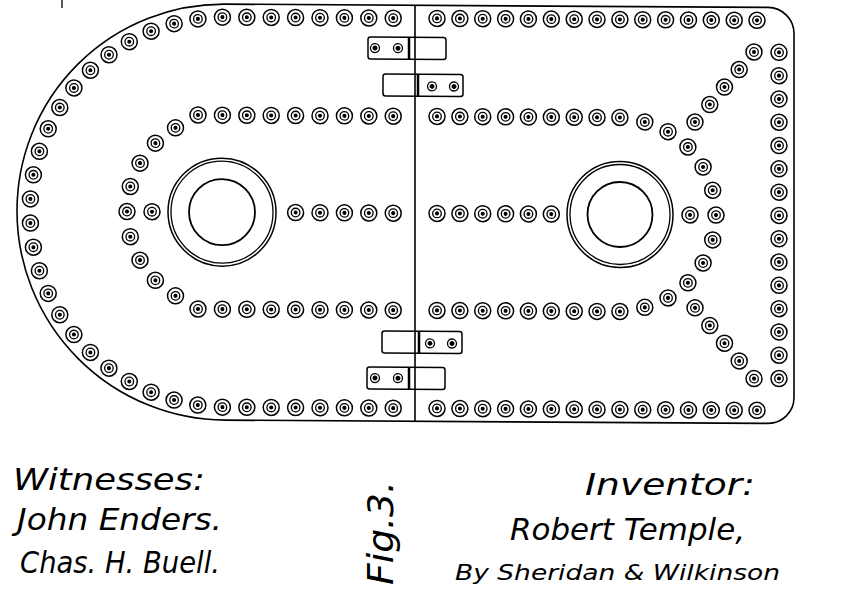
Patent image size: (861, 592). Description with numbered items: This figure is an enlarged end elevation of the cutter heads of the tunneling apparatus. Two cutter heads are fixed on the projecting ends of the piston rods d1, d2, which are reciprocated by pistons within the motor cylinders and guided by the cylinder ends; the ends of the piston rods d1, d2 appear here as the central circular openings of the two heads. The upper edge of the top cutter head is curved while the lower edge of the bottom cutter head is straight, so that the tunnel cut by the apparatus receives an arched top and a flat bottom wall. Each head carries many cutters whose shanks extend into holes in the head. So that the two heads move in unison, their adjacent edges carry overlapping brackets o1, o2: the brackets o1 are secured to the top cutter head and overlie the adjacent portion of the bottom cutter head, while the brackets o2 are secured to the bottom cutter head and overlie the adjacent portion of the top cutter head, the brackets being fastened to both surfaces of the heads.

The bracket o1 is at (453, 382).
The bracket o2 is at (374, 343).
The piston rod d1 is at (222, 212).
The piston rod d2 is at (620, 214).